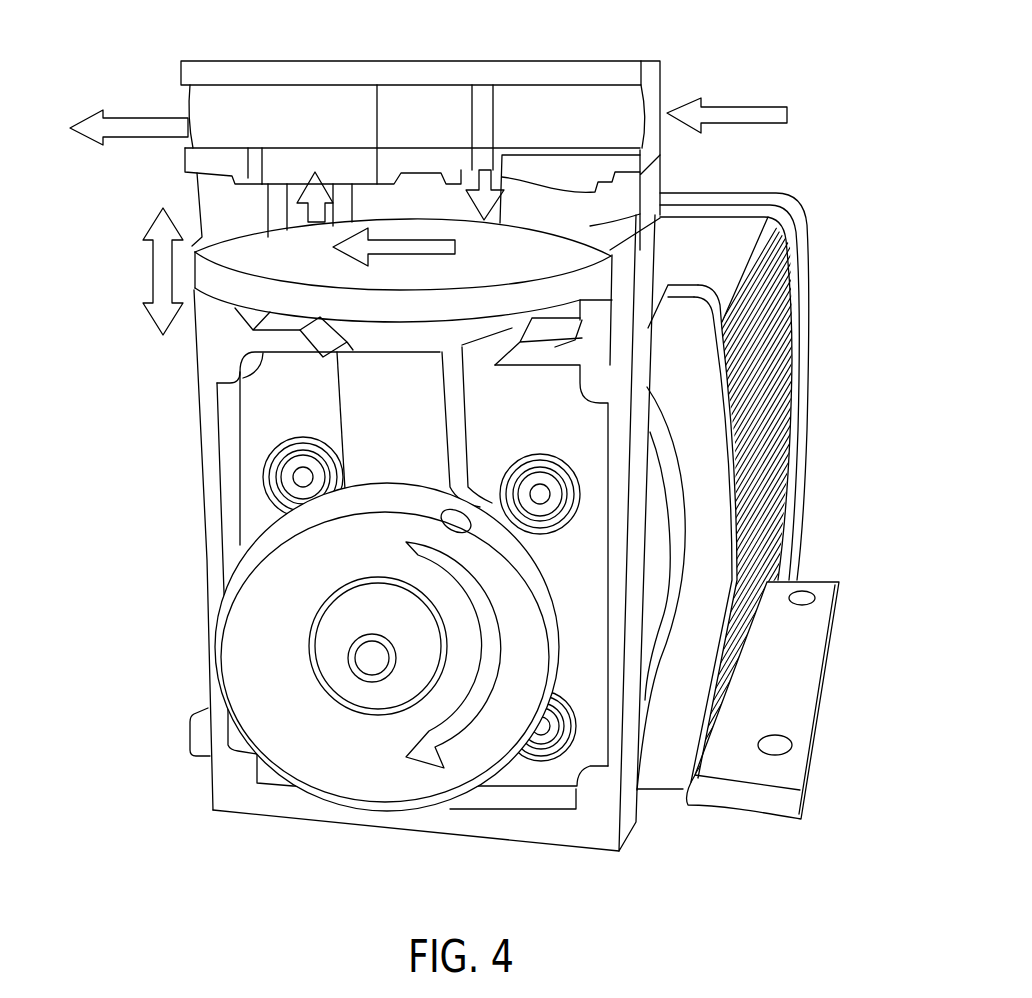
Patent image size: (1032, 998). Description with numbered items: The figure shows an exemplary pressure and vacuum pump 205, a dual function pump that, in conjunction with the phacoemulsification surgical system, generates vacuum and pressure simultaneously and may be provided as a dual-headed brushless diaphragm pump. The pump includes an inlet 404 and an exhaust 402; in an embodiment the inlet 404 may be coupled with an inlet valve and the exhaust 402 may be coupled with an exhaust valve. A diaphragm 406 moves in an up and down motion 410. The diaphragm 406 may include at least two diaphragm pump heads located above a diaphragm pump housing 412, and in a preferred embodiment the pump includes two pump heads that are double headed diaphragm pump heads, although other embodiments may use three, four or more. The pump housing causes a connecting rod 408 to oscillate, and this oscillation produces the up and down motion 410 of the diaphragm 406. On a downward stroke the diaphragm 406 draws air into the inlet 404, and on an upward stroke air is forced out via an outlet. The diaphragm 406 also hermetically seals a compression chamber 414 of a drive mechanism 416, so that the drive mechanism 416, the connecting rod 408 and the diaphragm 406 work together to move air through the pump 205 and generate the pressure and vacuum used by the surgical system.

The pressure and vacuum pump 205 is at (872, 152).
The exhaust 402 is at (199, 142).
The inlet 404 is at (662, 96).
The diaphragm 406 is at (237, 292).
The connecting rod 408 is at (375, 390).
The up and down motion 410 is at (150, 272).
The diaphragm pump housing 412 is at (590, 352).
The compression chamber 414 is at (590, 228).
The drive mechanism 416 is at (713, 450).